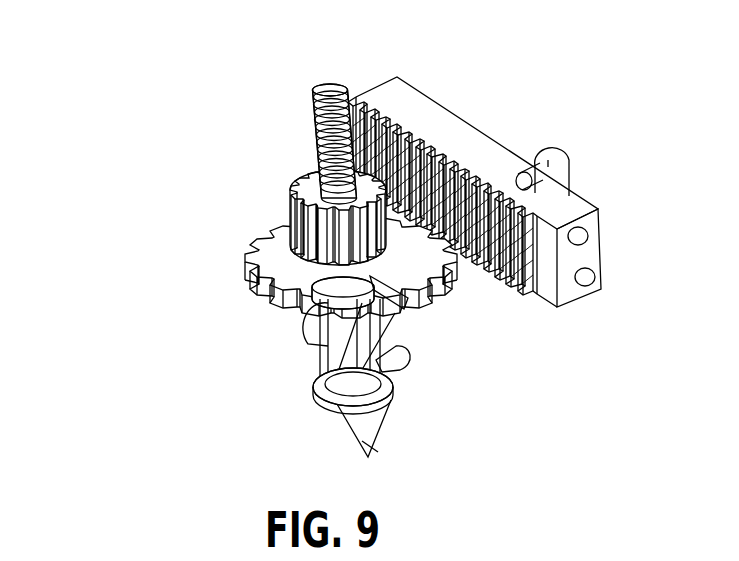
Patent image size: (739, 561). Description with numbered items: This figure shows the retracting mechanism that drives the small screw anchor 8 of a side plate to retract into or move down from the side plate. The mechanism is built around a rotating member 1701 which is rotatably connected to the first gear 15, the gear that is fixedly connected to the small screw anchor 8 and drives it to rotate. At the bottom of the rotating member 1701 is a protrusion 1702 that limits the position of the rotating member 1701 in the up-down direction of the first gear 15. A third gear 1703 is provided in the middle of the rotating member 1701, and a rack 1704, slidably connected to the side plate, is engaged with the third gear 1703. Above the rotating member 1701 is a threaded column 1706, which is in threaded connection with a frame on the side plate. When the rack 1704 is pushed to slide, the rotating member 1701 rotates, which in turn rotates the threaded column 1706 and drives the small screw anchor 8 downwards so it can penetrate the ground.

The rack 1704 is at (453, 115).
The first gear 15 is at (285, 267).
The protrusion 1702 is at (373, 280).
The small screw anchor 8 is at (333, 400).
The rotating member 1701 is at (210, 140).
The third gear 1703 is at (294, 213).
The threaded column 1706 is at (312, 103).